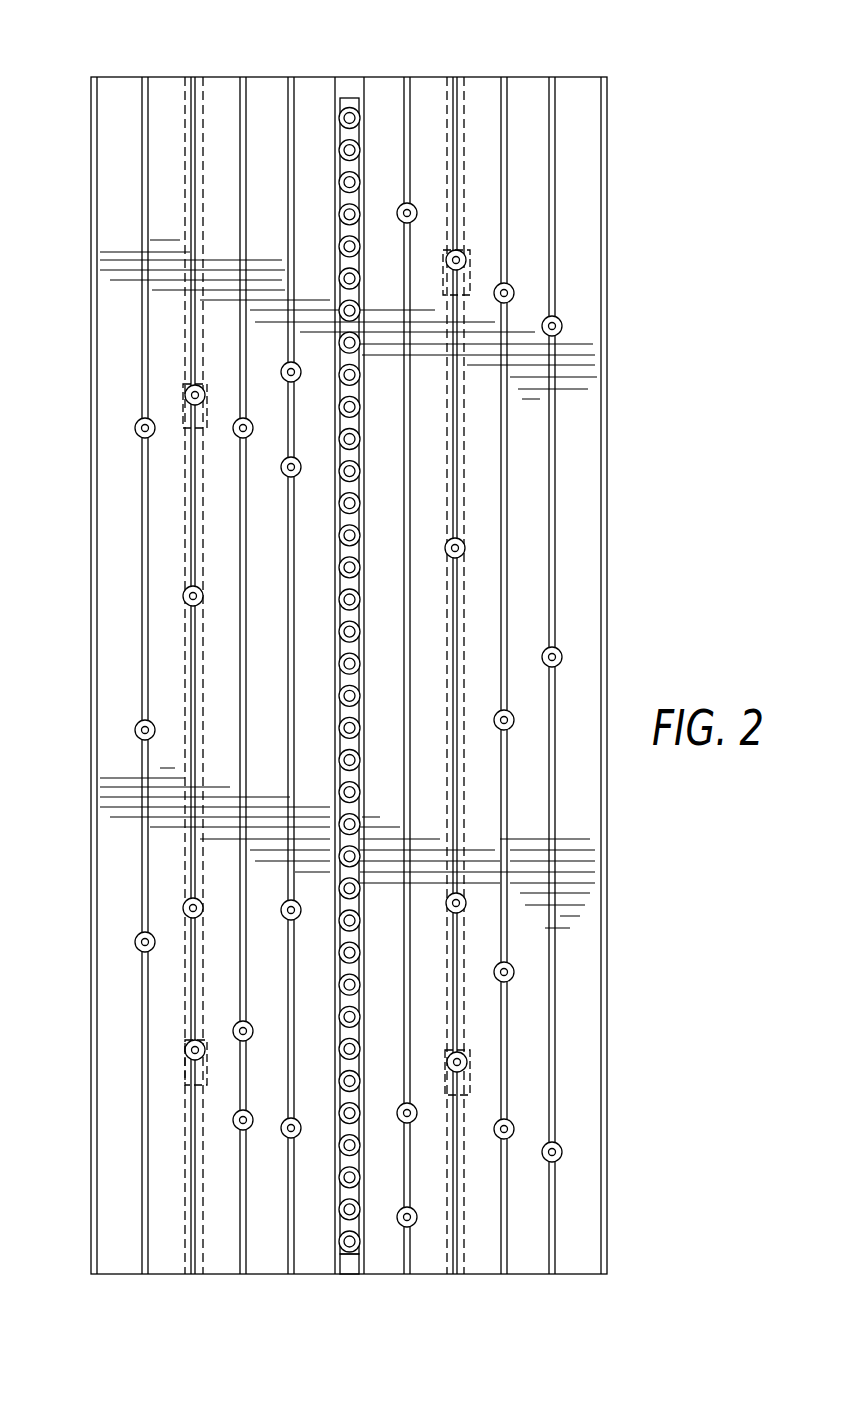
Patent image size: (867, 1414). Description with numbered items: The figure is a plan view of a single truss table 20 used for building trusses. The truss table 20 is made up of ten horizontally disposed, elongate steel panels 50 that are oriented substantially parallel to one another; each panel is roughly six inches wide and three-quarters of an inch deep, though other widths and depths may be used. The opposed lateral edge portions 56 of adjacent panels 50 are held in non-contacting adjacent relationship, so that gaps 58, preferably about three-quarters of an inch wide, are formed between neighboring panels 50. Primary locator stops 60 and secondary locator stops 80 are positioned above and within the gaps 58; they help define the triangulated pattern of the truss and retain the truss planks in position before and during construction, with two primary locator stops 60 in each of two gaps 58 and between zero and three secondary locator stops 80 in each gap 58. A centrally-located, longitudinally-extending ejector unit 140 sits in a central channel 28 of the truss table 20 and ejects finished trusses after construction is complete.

The truss table 20 is at (606, 66).
The central channel 28 is at (343, 1268).
The steel panels 50 is at (433, 92).
The lateral edge portions 56 is at (279, 1264).
The gaps 58 is at (243, 77).
The primary locator stops 60 is at (468, 262).
The secondary locator stops 80 is at (136, 431).
The ejector unit 140 is at (352, 1265).